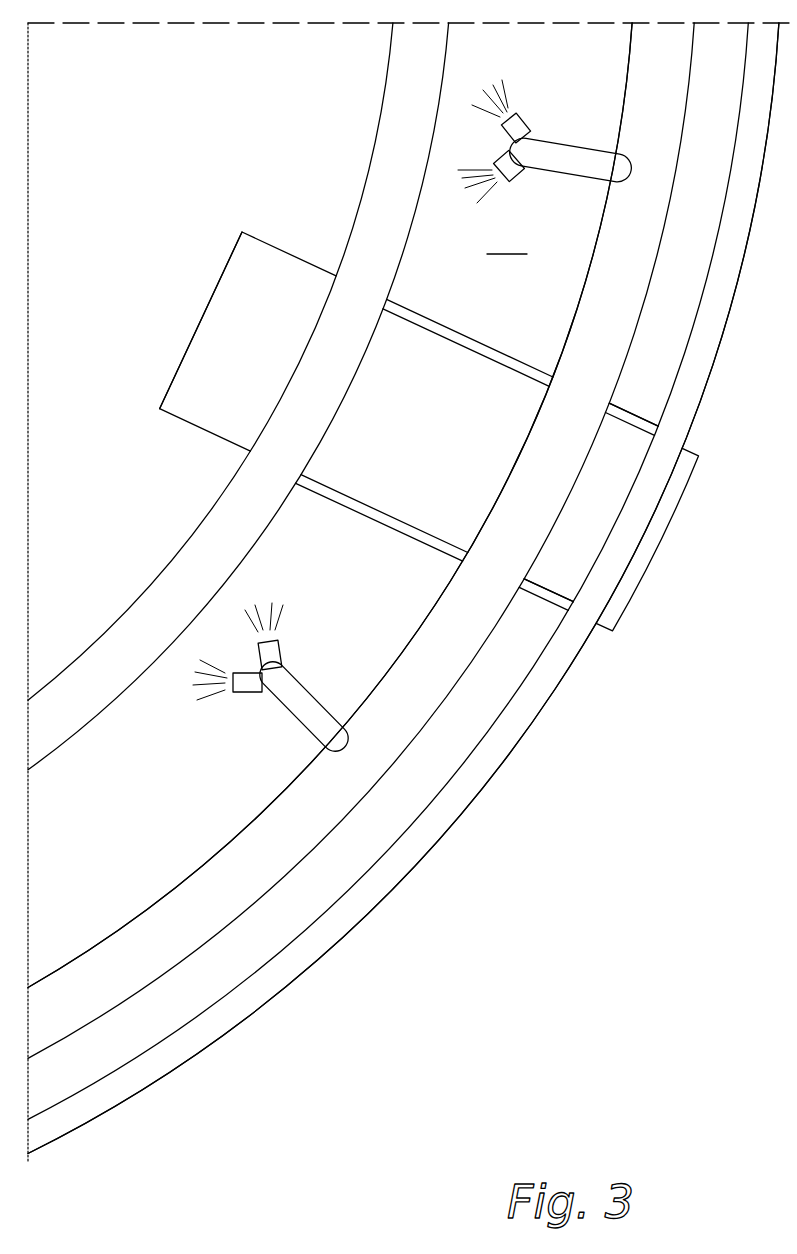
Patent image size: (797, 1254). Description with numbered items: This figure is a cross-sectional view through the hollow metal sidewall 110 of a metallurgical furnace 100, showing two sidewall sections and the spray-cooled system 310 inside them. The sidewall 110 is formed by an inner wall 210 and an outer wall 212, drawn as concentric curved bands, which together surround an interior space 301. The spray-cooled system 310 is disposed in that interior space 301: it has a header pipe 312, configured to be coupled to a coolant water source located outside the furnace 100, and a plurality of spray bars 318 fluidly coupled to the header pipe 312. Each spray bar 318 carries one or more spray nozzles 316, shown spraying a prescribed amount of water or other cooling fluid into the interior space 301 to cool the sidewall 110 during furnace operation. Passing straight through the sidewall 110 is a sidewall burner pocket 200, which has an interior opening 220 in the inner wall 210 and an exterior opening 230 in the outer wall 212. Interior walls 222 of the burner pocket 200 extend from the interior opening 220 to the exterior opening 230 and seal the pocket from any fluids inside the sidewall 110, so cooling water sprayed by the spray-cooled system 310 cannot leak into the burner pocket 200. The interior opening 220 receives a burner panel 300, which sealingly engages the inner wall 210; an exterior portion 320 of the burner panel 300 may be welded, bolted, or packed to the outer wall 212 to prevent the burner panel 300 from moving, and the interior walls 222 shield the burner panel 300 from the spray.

The metallurgical furnace 100 is at (610, 958).
The sidewall 110 is at (219, 1041).
The sidewall burner pocket 200 is at (394, 508).
The inner wall 210 is at (182, 548).
The outer wall 212 is at (338, 947).
The interior opening 220 is at (288, 382).
The interior walls 222 is at (437, 311).
The exterior opening 230 is at (638, 590).
The burner panel 300 is at (211, 302).
The interior space 301 is at (509, 241).
The spray-cooled system 310 is at (579, 306).
The header pipe 312 is at (213, 856).
The spray nozzle 316 is at (525, 122).
The spray bar 318 is at (552, 172).
The exterior portion 320 is at (660, 546).